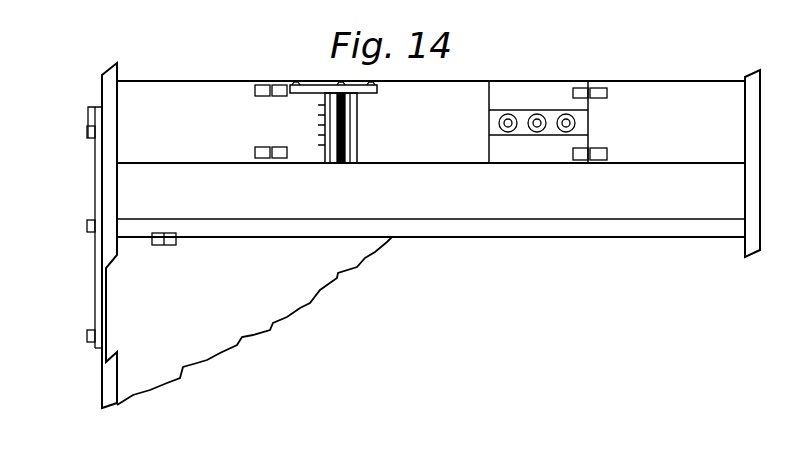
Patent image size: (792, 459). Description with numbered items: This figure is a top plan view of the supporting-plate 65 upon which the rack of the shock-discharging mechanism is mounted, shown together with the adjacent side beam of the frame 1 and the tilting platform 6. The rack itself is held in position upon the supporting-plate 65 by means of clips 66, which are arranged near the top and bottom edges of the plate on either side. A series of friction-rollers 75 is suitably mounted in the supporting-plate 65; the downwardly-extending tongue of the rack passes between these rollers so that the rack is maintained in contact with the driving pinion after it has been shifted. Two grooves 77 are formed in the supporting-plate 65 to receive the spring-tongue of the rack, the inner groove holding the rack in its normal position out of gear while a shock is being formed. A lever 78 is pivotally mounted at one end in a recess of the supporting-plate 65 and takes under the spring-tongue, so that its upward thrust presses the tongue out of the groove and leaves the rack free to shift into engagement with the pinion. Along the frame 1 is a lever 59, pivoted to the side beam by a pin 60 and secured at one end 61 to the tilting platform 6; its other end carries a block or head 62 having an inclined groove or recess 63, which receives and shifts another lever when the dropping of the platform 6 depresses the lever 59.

The frame 1 is at (110, 198).
The tilting platform 6 is at (254, 321).
The lever 59 is at (98, 194).
The pin 60 is at (88, 232).
The end of lever 61 is at (87, 334).
The block or head 62 is at (94, 115).
The inclined groove or recess 63 is at (87, 136).
The supporting-plate 65 is at (407, 124).
The clips 66 is at (266, 147).
The friction-rollers 75 is at (548, 142).
The grooves 77 is at (348, 172).
The lever 78 is at (298, 84).